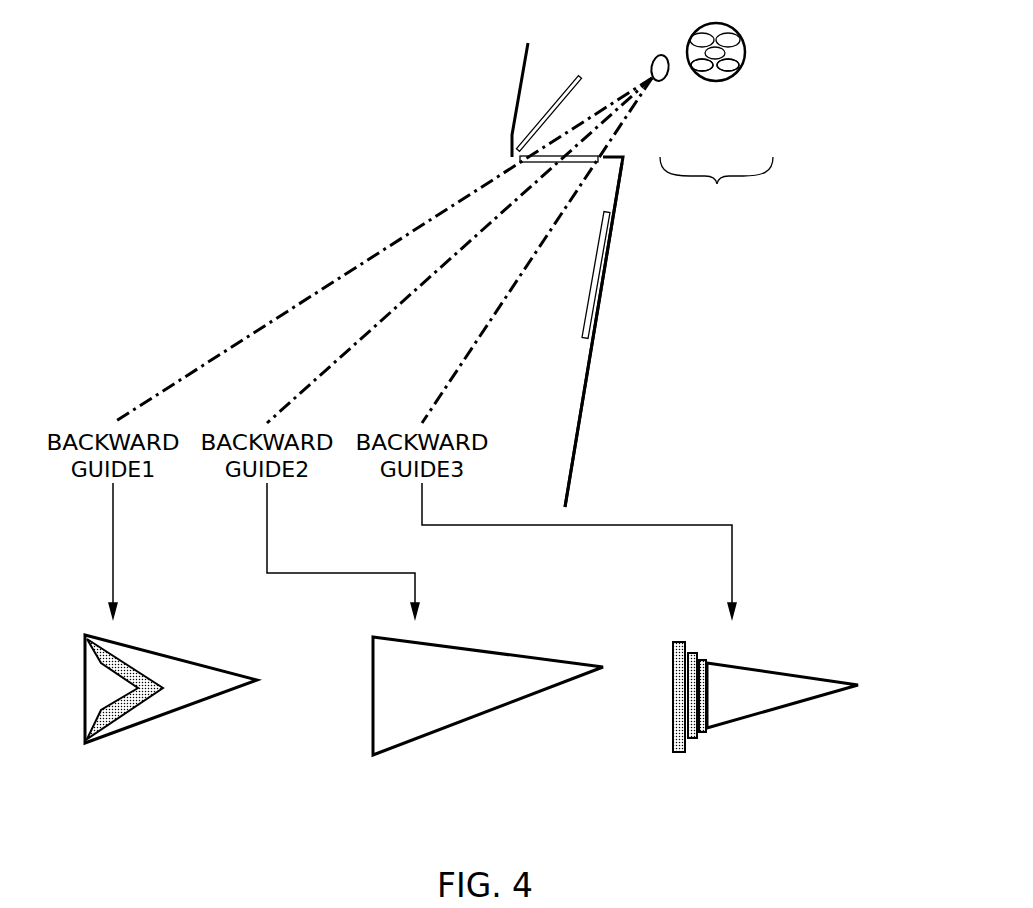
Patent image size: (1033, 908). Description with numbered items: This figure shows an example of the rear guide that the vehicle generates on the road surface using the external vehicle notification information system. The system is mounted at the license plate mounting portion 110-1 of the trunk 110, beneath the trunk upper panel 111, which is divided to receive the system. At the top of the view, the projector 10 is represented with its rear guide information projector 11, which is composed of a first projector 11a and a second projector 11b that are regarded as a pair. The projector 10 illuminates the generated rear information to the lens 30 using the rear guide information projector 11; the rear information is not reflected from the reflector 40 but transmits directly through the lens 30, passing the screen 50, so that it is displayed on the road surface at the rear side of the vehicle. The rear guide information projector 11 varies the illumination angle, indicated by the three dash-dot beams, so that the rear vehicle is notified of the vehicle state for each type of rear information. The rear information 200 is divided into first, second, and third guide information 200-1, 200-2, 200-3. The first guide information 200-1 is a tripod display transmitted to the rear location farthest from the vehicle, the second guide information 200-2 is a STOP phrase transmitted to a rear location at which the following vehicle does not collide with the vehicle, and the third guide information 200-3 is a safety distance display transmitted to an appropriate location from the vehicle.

The projector 10 is at (743, 50).
The rear guide information projector 11 is at (716, 187).
The first projector 11a is at (703, 70).
The second projector 11b is at (727, 70).
The lens 30 is at (578, 163).
The reflector 40 is at (565, 80).
The screen 50 is at (608, 273).
The trunk 110 is at (433, 177).
The license plate mounting portion 110-1 is at (573, 455).
The trunk upper panel 111 is at (521, 72).
The rear information 200 is at (505, 606).
The first guide information 200-1 is at (172, 715).
The second guide information 200-2 is at (482, 717).
The third guide information 200-3 is at (765, 717).